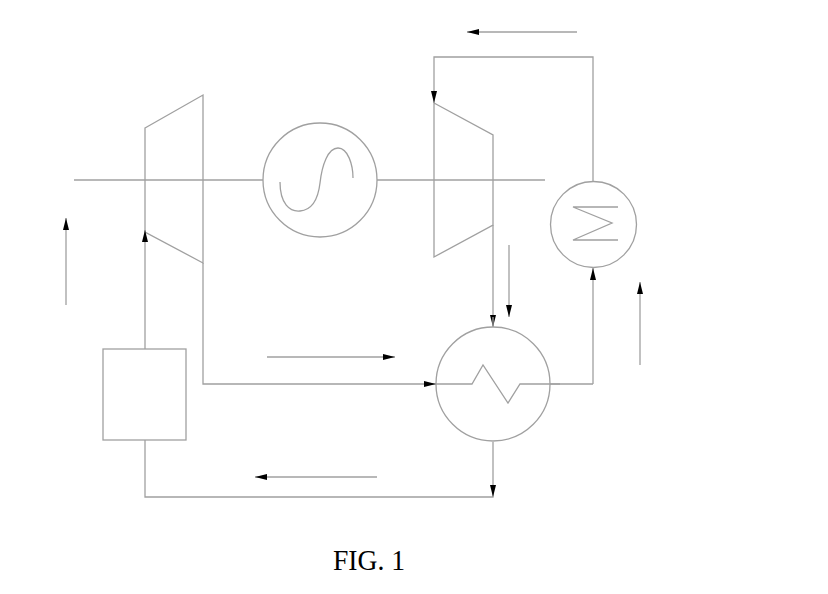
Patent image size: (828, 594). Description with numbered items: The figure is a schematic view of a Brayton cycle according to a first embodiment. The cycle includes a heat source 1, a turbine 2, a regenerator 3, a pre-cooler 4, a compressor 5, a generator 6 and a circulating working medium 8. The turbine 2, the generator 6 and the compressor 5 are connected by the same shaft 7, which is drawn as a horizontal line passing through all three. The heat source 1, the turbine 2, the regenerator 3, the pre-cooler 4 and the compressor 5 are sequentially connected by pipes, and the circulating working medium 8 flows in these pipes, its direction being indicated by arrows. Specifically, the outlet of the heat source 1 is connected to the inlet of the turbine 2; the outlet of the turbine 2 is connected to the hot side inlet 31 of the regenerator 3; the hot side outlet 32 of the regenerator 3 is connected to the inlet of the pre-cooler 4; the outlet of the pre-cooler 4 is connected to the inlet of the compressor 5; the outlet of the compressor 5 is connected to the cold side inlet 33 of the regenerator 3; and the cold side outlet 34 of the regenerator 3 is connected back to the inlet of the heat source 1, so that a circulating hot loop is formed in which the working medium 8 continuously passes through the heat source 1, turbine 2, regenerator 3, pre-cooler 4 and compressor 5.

The heat source 1 is at (120, 335).
The turbine 2 is at (159, 156).
The regenerator 3 is at (387, 400).
The hot side inlet 31 is at (437, 382).
The hot side outlet 32 is at (550, 385).
The cold side inlet 33 is at (490, 326).
The cold side outlet 34 is at (493, 442).
The pre-cooler 4 is at (626, 244).
The compressor 5 is at (466, 178).
The generator 6 is at (304, 147).
The shaft 7 is at (299, 137).
The circulating working medium 8 is at (353, 240).